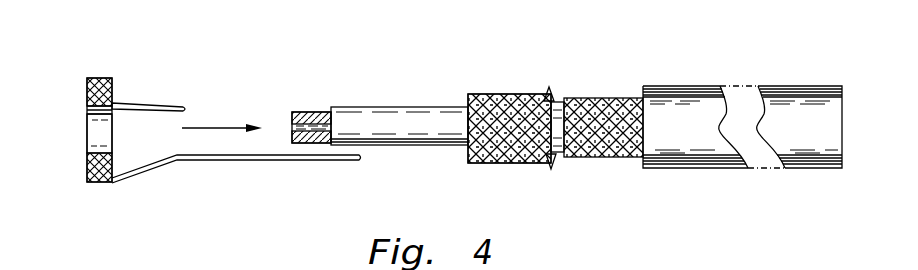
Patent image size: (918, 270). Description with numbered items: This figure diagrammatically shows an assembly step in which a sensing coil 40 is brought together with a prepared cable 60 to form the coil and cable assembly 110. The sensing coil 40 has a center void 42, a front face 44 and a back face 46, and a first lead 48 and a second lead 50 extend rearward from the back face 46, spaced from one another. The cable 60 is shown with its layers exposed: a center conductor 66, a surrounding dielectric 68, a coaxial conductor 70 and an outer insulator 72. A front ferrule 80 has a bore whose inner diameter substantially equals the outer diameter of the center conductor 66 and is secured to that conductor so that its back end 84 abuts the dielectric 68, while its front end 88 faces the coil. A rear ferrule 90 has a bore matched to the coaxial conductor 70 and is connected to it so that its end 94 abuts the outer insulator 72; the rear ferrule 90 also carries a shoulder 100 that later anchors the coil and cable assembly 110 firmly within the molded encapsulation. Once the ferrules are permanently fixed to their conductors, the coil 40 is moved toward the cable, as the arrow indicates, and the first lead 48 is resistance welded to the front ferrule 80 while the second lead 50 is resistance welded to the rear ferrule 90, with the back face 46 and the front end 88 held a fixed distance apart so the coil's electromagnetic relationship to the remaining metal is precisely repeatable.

The sensing coil 40 is at (102, 66).
The center void 42 is at (97, 128).
The front face 44 is at (90, 80).
The back face 46 is at (104, 80).
The first lead 48 is at (168, 104).
The second lead 50 is at (218, 162).
The cable 60 is at (710, 66).
The center conductor 66 is at (312, 144).
The dielectric 68 is at (418, 141).
The coaxial conductor 70 is at (510, 163).
The outer insulator 72 is at (553, 164).
The front ferrule 80 is at (315, 90).
The back end 84 is at (335, 107).
The front end 88 is at (292, 118).
The rear ferrule 90 is at (492, 62).
The end 94 is at (556, 94).
The shoulder 100 is at (551, 92).
The coil and cable assembly 110 is at (605, 269).